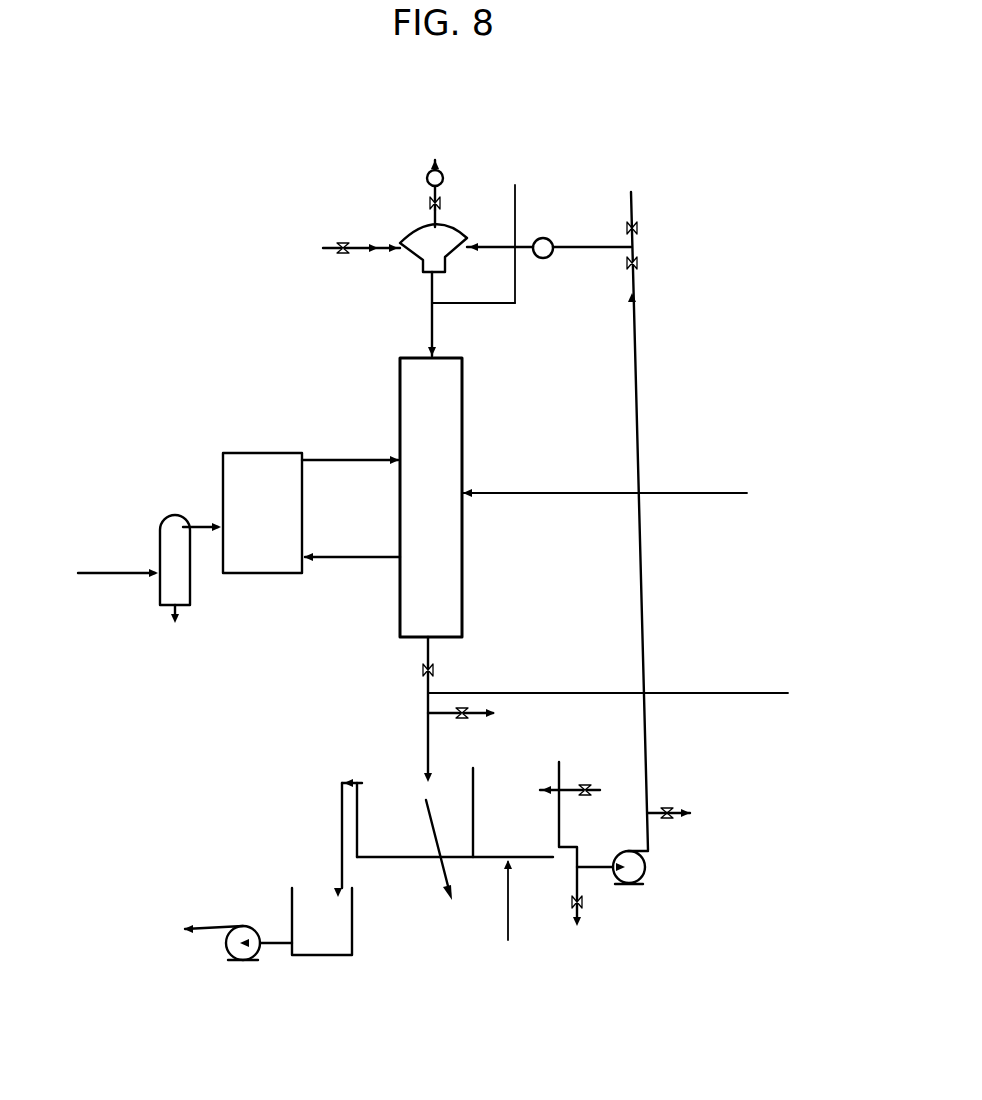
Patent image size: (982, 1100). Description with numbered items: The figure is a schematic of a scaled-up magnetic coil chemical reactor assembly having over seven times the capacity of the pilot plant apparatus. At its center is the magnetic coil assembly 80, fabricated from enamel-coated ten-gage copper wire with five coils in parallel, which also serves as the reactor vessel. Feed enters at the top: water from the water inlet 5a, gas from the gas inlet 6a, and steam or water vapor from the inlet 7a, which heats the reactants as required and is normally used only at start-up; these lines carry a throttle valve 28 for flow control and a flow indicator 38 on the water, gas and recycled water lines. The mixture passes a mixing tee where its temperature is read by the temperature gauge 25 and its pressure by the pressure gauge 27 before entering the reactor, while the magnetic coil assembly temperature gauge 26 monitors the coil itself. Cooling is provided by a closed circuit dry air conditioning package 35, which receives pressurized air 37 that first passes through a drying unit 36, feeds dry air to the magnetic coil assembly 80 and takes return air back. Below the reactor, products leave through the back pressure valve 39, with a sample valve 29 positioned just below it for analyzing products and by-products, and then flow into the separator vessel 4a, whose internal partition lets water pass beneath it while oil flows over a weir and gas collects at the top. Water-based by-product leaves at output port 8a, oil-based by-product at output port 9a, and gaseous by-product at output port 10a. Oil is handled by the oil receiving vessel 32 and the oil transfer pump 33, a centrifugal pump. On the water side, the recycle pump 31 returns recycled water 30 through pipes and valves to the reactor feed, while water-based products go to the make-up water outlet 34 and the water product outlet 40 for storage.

The separator vessel 4a is at (514, 912).
The water inlet 5a is at (631, 193).
The gas inlet 6a is at (437, 194).
The steam or water vapor inlet 7a is at (358, 248).
The output port 8a is at (582, 913).
The output port 9a is at (338, 843).
The output port 10a is at (443, 875).
The temperature gauge 25 is at (624, 429).
The magnetic coil assembly temperature gauge 26 is at (620, 495).
The pressure gauge 27 is at (432, 335).
The throttle valve 28 is at (433, 203).
The sample valve 29 is at (462, 713).
The recycled water 30 is at (632, 263).
The recycle pump 31 is at (645, 867).
The oil receiving vessel 32 is at (321, 957).
The oil transfer pump 33 is at (226, 943).
The make-up water outlet 34 is at (572, 775).
The dry air conditioning package 35 is at (248, 484).
The drying unit 36 is at (172, 543).
The pressurized air 37 is at (110, 575).
The flow indicator 38 is at (427, 175).
The back pressure valve 39 is at (423, 670).
The water product outlet 40 is at (690, 813).
The magnetic coil assembly 80 is at (443, 420).